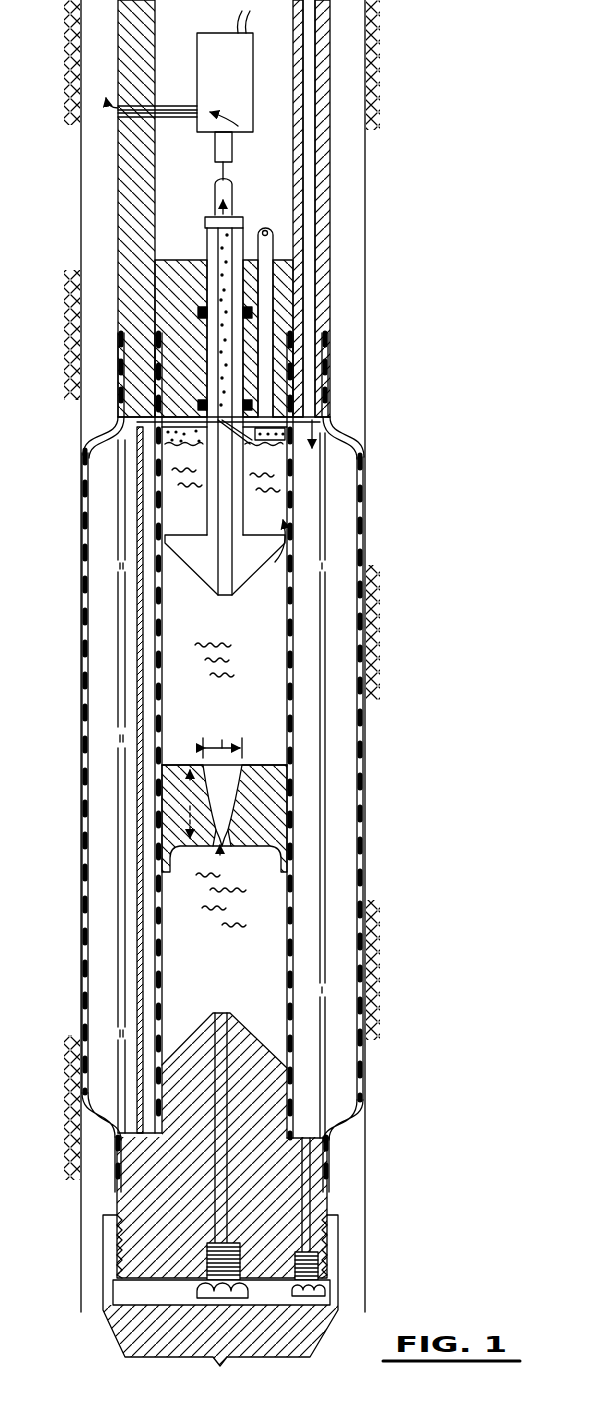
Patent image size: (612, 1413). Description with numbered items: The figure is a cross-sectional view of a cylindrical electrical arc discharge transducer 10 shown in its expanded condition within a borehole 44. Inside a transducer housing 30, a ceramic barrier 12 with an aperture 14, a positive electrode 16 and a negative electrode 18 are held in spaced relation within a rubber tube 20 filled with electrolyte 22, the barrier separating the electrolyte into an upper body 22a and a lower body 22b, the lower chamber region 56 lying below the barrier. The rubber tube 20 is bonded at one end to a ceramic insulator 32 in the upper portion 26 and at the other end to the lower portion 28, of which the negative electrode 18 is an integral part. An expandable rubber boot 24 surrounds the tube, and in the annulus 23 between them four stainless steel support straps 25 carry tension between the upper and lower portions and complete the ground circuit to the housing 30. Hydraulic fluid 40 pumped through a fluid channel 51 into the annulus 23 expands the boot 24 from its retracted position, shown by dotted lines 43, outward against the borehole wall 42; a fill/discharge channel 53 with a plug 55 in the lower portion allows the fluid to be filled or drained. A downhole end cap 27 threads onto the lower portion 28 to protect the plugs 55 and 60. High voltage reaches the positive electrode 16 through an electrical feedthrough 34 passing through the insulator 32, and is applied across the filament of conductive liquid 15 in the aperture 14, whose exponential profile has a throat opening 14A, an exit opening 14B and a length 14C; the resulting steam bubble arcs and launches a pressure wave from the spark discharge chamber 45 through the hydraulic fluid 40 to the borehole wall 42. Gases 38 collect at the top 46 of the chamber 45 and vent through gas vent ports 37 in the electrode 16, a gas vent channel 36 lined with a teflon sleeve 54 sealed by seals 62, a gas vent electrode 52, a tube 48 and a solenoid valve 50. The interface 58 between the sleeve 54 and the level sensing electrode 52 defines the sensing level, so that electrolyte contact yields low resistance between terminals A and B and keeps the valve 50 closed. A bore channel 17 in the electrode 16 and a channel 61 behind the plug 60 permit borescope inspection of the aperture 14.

The cylindrical electrical arc discharge transducer 10 is at (350, 334).
The ceramic barrier 12 is at (262, 770).
The aperture 14 is at (236, 780).
The throat opening 14A is at (225, 860).
The exit opening 14B is at (224, 732).
The length of aperture 14C is at (195, 804).
The filament of conductive liquid 15 is at (235, 808).
The positive electrode 16 is at (253, 560).
The bore channel 17 is at (223, 582).
The negative electrode 18 is at (245, 1062).
The rubber tube 20 is at (290, 692).
The electrolyte 22 is at (250, 653).
The upper body of electrolyte 22a is at (160, 650).
The lower body of electrolyte 22b is at (165, 920).
The annulus 23 is at (100, 703).
The expandable rubber boot 24 is at (82, 770).
The stainless steel support straps 25 is at (137, 608).
The upper portion 26 is at (132, 340).
The downhole end cap 27 is at (318, 1325).
The lower portion 28 is at (140, 1158).
The transducer housing 30 is at (118, 287).
The ceramic insulator 32 is at (180, 272).
The electrical feedthrough 34 is at (268, 266).
The gas vent channel 36 is at (222, 350).
The gas vent ports 37 is at (208, 442).
The gases 38 is at (222, 262).
The hydraulic fluid 40 is at (107, 538).
The borehole wall 42 is at (365, 212).
The dotted lines 43 is at (118, 486).
The borehole 44 is at (366, 168).
The spark discharge chamber 45 is at (240, 628).
The top of electrolyte chamber 46 is at (310, 450).
The tube 48 is at (229, 196).
The solenoid valve 50 is at (238, 89).
The fluid channel 51 is at (310, 118).
The gas vent electrode 52 is at (243, 206).
The hydraulic fluid fill/discharge channel 53 is at (307, 1183).
The teflon sleeve 54 is at (255, 434).
The plug 55 is at (292, 1290).
The lower chamber 56 is at (160, 950).
The interface 58 is at (207, 323).
The plug 60 is at (196, 1290).
The channel 61 is at (222, 1030).
The seals 62 is at (253, 400).
The electrical terminal A is at (265, 228).
The electrical terminal B is at (207, 240).